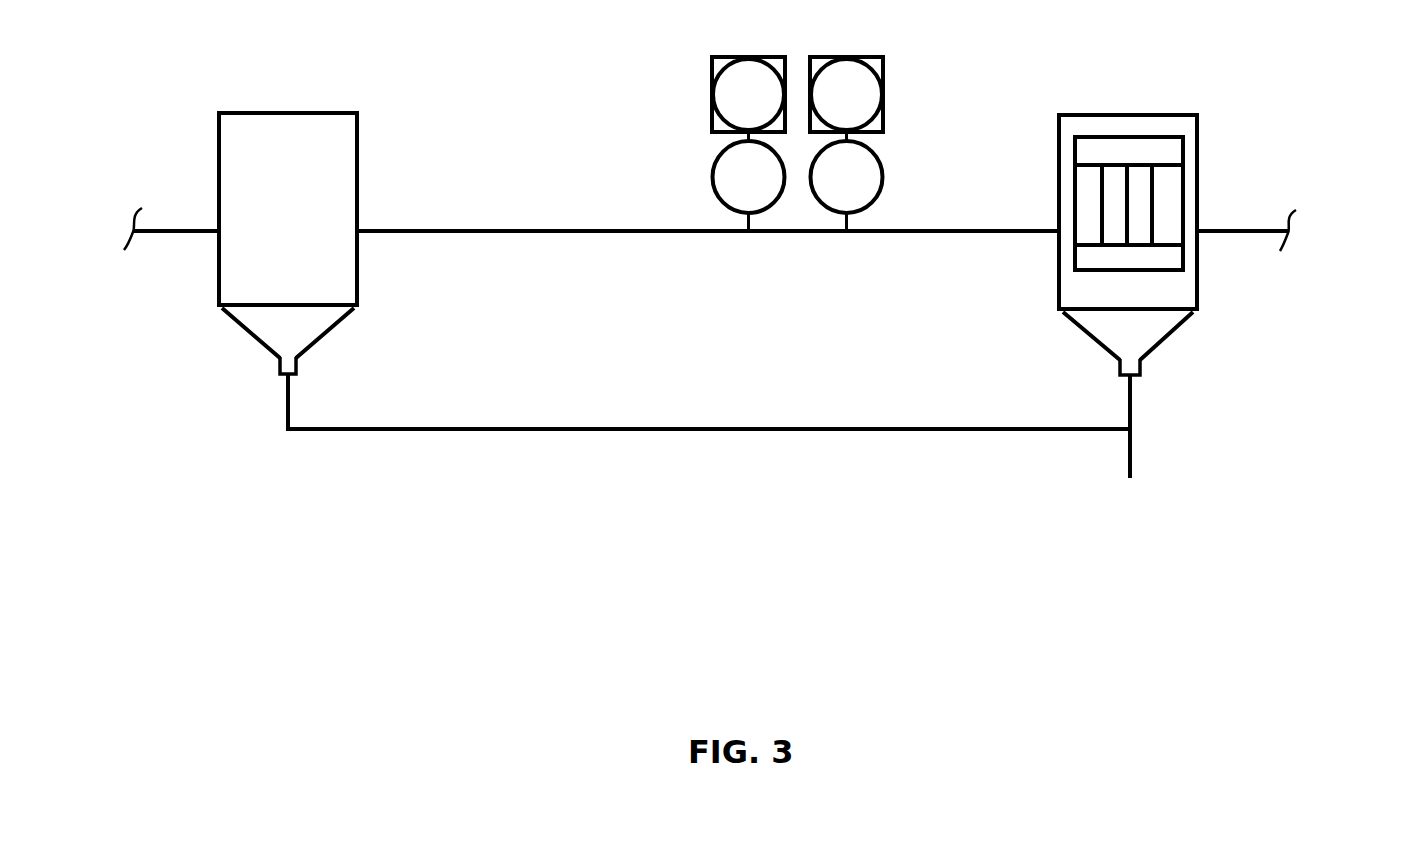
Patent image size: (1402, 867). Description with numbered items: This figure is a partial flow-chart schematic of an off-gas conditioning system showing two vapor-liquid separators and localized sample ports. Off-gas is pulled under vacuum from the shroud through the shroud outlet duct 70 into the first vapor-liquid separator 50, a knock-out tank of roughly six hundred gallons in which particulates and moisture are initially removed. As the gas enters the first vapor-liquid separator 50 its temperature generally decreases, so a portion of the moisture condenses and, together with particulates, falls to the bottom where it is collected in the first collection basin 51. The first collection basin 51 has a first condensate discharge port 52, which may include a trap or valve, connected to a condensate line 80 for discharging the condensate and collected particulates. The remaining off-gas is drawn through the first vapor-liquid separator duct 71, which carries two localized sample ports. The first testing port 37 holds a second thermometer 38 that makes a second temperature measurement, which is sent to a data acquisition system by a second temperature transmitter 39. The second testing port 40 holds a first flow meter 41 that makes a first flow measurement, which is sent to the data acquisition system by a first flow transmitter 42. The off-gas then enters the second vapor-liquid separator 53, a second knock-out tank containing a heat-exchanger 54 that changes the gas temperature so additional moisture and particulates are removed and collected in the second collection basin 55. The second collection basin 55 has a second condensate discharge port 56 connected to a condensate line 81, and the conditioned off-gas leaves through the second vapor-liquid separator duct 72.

The first testing port 37 is at (746, 226).
The second thermometer 38 is at (735, 191).
The second temperature transmitter 39 is at (735, 109).
The second testing port 40 is at (850, 228).
The first flow meter 41 is at (833, 191).
The first flow transmitter 42 is at (833, 109).
The first vapor-liquid separator 50 is at (306, 112).
The first collection basin 51 is at (308, 328).
The first condensate discharge port 52 is at (279, 366).
The second vapor-liquid separator 53 is at (1093, 113).
The heat-exchanger 54 is at (1185, 153).
The second collection basin 55 is at (1150, 330).
The second condensate discharge port 56 is at (1140, 372).
The shroud outlet duct 70 is at (181, 229).
The first vapor-liquid separator duct 71 is at (435, 229).
The second vapor-liquid separator duct 72 is at (1245, 230).
The condensate line 80 is at (290, 401).
The condensate line 81 is at (1135, 428).